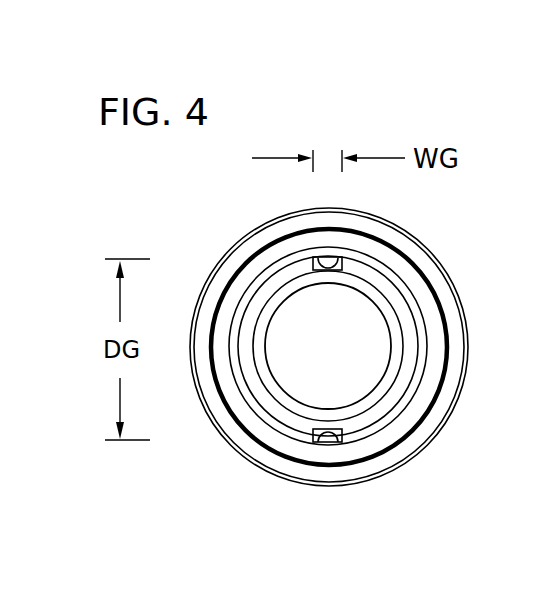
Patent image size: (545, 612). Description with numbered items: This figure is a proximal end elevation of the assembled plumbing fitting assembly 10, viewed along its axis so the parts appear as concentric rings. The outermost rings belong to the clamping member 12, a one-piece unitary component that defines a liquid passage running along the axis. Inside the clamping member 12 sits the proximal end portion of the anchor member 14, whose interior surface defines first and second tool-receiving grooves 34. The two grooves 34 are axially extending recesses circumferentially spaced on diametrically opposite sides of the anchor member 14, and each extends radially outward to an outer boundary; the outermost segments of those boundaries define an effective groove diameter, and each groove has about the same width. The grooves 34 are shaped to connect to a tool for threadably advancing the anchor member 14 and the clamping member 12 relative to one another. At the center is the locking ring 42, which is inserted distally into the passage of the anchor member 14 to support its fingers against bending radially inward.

The plumbing fitting assembly 10 is at (151, 495).
The clamping member 12 is at (247, 460).
The anchor member 14 is at (354, 303).
The tool-receiving grooves 34 is at (342, 267).
The locking ring 42 is at (298, 313).